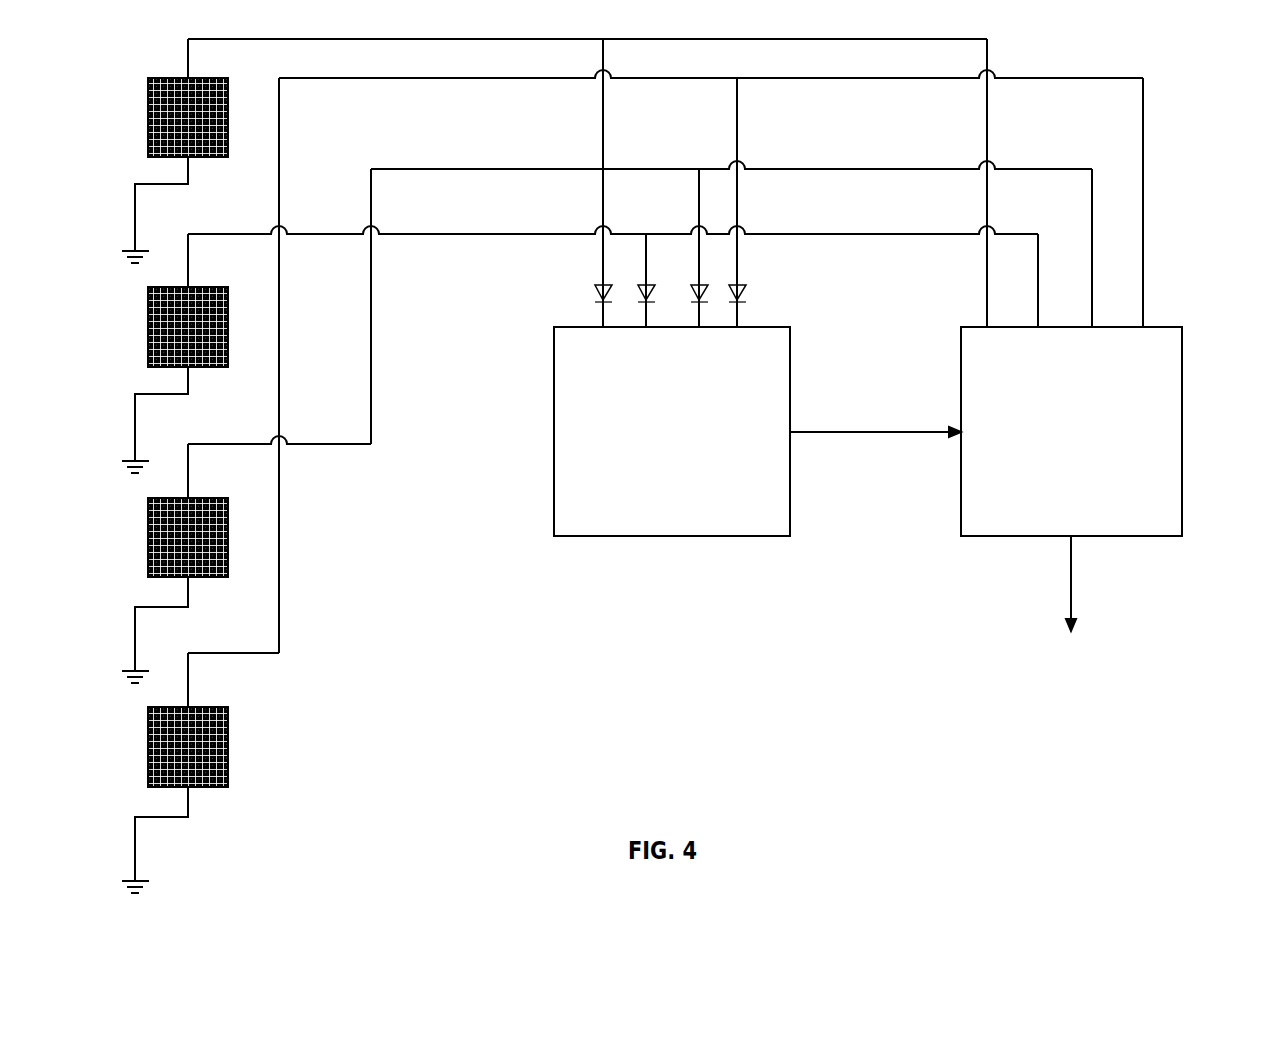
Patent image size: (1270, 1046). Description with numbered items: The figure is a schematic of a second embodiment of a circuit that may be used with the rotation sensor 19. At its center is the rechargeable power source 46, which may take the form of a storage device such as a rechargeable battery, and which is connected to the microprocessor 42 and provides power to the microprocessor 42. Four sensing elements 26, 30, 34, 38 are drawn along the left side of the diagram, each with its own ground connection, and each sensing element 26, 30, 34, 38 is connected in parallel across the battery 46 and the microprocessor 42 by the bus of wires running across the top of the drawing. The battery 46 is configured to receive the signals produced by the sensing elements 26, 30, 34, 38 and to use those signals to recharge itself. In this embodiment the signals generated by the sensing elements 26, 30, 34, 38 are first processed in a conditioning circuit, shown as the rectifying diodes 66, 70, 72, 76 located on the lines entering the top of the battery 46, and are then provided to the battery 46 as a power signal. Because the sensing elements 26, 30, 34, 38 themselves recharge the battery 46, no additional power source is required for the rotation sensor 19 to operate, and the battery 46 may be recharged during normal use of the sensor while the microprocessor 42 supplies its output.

The rotation sensor 19 is at (870, 680).
The sensing element 26 is at (228, 78).
The sensing element 30 is at (228, 287).
The sensing element 34 is at (228, 498).
The sensing element 38 is at (228, 746).
The microprocessor 42 is at (1182, 327).
The rechargeable power source 46 is at (790, 327).
The rectifying diode 66 is at (598, 289).
The rectifying diode 70 is at (648, 290).
The rectifying diode 72 is at (701, 290).
The rectifying diode 76 is at (742, 290).